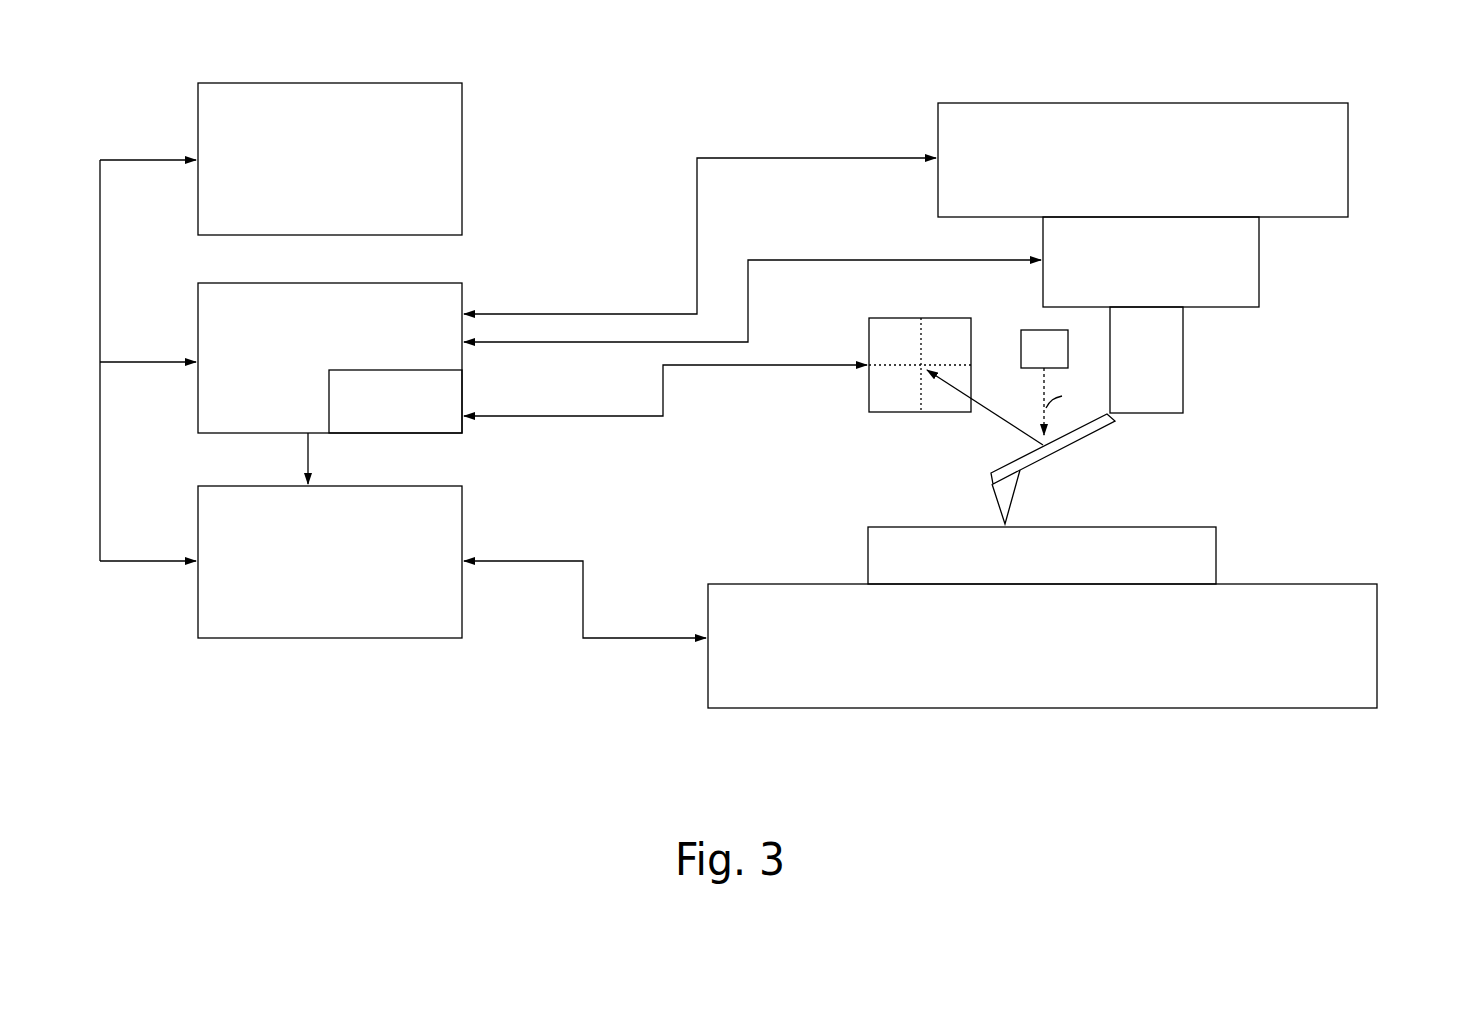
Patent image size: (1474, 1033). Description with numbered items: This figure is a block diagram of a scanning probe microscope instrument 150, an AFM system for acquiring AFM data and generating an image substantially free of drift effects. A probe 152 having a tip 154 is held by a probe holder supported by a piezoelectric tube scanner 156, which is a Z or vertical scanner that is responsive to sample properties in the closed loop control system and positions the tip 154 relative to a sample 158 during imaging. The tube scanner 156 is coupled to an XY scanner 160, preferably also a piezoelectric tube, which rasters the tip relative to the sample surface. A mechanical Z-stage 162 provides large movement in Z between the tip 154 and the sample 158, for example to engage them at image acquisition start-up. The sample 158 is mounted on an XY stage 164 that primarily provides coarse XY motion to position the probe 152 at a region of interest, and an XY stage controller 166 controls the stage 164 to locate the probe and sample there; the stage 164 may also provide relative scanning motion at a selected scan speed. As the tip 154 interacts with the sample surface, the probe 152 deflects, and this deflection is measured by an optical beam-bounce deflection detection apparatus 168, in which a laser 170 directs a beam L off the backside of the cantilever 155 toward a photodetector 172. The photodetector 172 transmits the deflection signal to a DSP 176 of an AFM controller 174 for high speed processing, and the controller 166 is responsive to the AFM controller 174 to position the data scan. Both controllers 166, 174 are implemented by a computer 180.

The scanning probe microscope instrument 150 is at (1336, 63).
The probe 152 is at (1078, 469).
The tip 154 is at (997, 502).
The cantilever 155 is at (1062, 448).
The piezoelectric tube scanner 156 is at (1183, 358).
The sample 158 is at (1195, 525).
The XY scanner 160 is at (1259, 258).
The mechanical Z-stage 162 is at (1348, 150).
The XY stage 164 is at (1377, 645).
The XY stage controller 166 is at (413, 640).
The optical beam-bounce deflection detection apparatus 168 is at (983, 439).
The laser 170 is at (1021, 353).
The photodetector 172 is at (869, 332).
The AFM controller 174 is at (437, 282).
The DSP 176 is at (438, 422).
The computer 180 is at (443, 82).